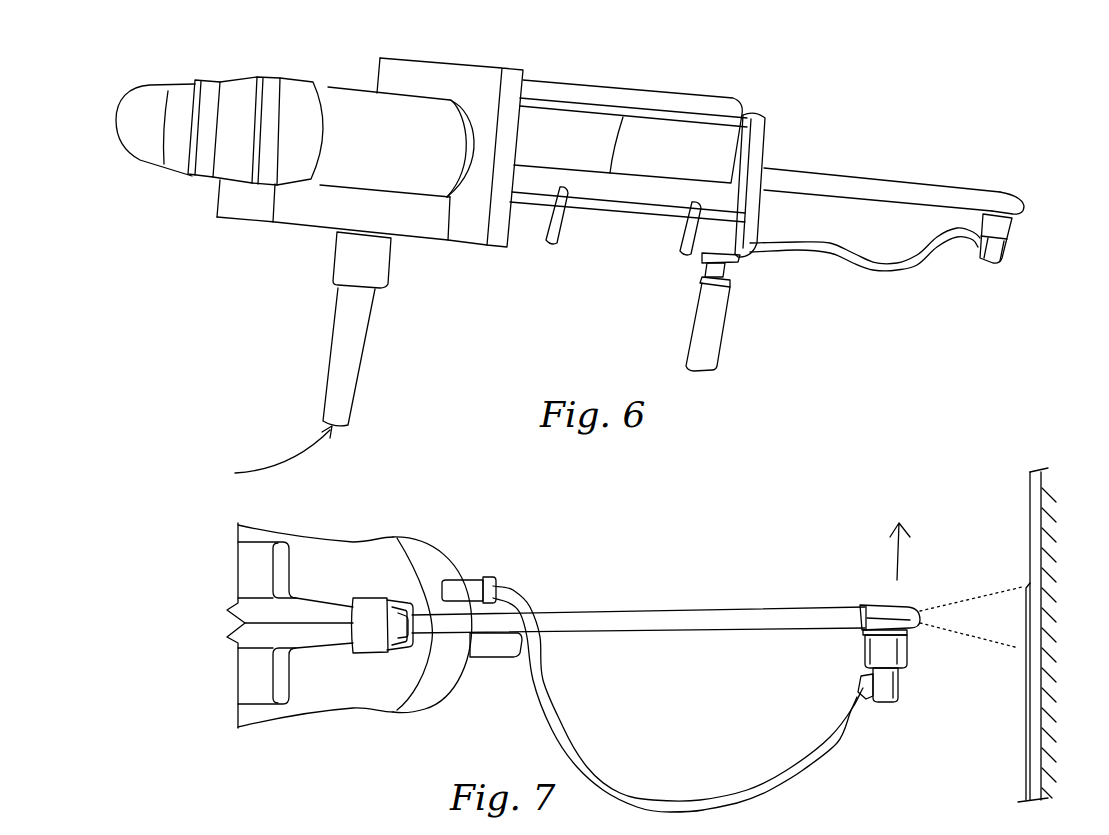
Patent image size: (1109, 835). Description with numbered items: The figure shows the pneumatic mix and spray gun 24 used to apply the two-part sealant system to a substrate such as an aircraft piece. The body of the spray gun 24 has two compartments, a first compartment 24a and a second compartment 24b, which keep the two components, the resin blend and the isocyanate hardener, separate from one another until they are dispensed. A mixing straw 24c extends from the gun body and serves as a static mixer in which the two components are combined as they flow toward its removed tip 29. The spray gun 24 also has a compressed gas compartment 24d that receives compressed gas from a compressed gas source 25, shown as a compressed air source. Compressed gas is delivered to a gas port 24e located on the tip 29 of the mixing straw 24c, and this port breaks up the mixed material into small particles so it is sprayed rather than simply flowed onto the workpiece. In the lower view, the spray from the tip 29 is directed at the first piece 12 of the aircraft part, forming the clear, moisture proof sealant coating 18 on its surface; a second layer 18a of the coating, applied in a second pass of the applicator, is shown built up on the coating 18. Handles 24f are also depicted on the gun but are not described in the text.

In FIG. 7, the first piece 12 is at (1053, 568).
In FIG. 7, the sealant coating 18 is at (1030, 470).
In FIG. 7, the second layer 18a is at (1022, 743).
In FIG. 7, the pneumatic mix and spray gun 24 is at (330, 529).
In FIG. 6, the first compartment 24a is at (557, 120).
In FIG. 7, the first compartment 24a is at (255, 593).
In FIG. 7, the second compartment 24b is at (255, 653).
In FIG. 6, the mixing straw 24c is at (853, 177).
In FIG. 7, the mixing straw 24c is at (697, 607).
In FIG. 6, the compressed gas compartment 24d is at (357, 93).
In FIG. 6, the gas port 24e is at (1003, 254).
In FIG. 7, the gas port 24e is at (905, 674).
In FIG. 6, the handle 24f is at (330, 351).
In FIG. 6, the compressed gas source 25 is at (216, 459).
In FIG. 6, the removed tip 29 is at (1007, 184).
In FIG. 7, the removed tip 29 is at (912, 593).